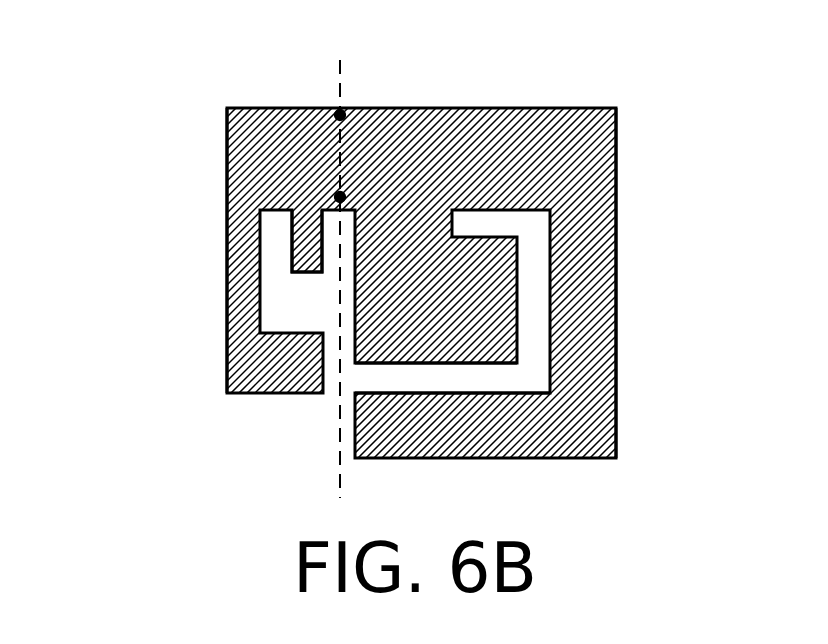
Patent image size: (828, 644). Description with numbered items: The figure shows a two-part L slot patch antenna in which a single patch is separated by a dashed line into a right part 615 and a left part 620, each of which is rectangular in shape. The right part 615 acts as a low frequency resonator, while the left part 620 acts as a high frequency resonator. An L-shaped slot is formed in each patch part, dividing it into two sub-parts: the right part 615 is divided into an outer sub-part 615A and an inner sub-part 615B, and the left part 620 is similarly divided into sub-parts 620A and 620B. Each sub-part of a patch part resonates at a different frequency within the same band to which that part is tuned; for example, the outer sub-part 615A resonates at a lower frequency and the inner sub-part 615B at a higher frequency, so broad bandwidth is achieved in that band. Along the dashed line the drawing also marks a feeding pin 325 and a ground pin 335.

The left patch part 620 is at (175, 163).
The right patch part 615 is at (652, 143).
The outer sub-part of left patch part 620A is at (227, 325).
The inner sub-part of left patch part 620B is at (311, 274).
The outer sub-part of right patch part 615A is at (617, 333).
The inner sub-part of right patch part 615B is at (377, 363).
The feeding pin 325 is at (340, 197).
The ground pin 335 is at (340, 115).